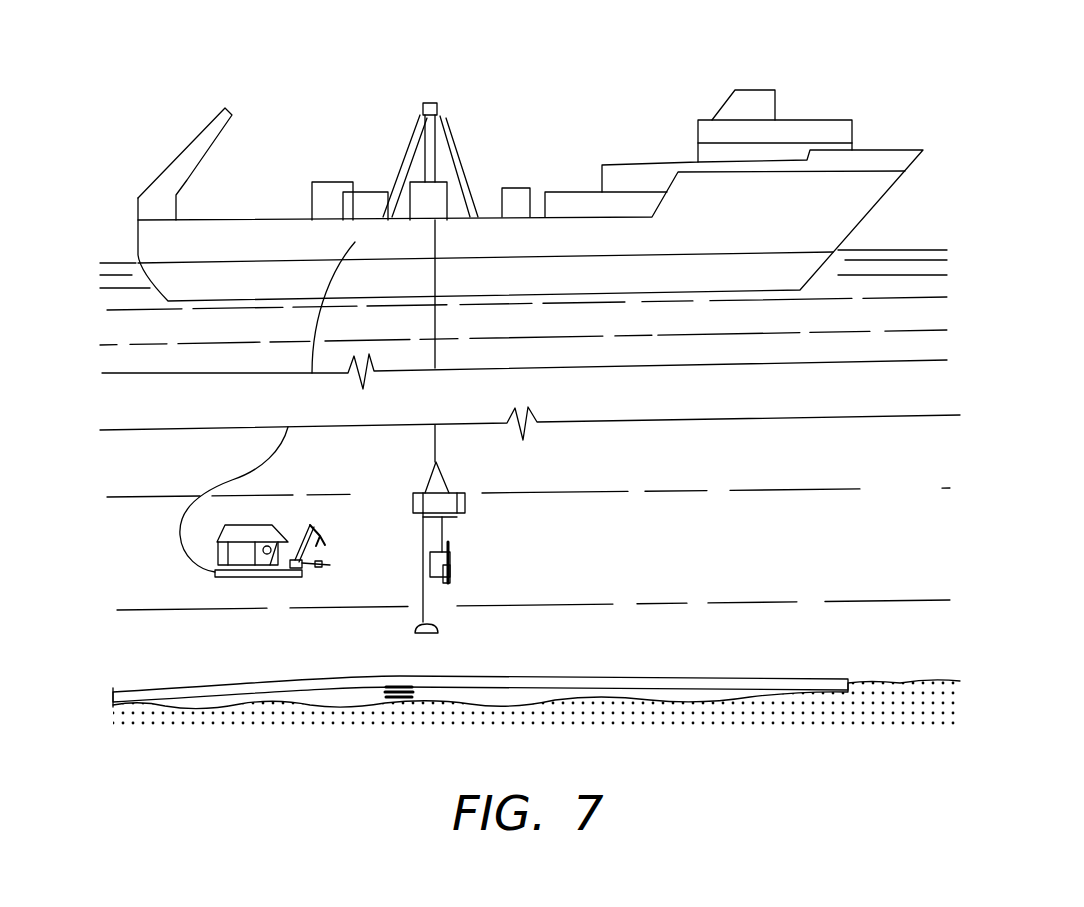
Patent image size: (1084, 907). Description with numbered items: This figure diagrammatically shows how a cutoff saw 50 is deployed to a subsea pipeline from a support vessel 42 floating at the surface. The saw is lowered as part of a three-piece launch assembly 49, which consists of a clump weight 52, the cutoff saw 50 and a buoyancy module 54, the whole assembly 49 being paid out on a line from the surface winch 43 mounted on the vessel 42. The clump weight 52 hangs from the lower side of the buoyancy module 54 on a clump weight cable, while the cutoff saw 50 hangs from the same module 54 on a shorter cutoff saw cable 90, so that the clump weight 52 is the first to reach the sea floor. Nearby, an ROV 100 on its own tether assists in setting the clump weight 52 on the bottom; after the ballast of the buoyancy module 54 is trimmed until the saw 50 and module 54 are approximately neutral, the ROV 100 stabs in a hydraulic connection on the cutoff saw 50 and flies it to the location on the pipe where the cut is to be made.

The support vessel 42 is at (622, 178).
The surface winch 43 is at (417, 180).
The three-piece launch assembly 49 is at (482, 508).
The cutoff saw 50 is at (452, 560).
The clump weight 52 is at (428, 634).
The buoyancy module 54 is at (462, 493).
The cutoff saw cable 90 is at (442, 532).
The ROV 100 is at (243, 533).